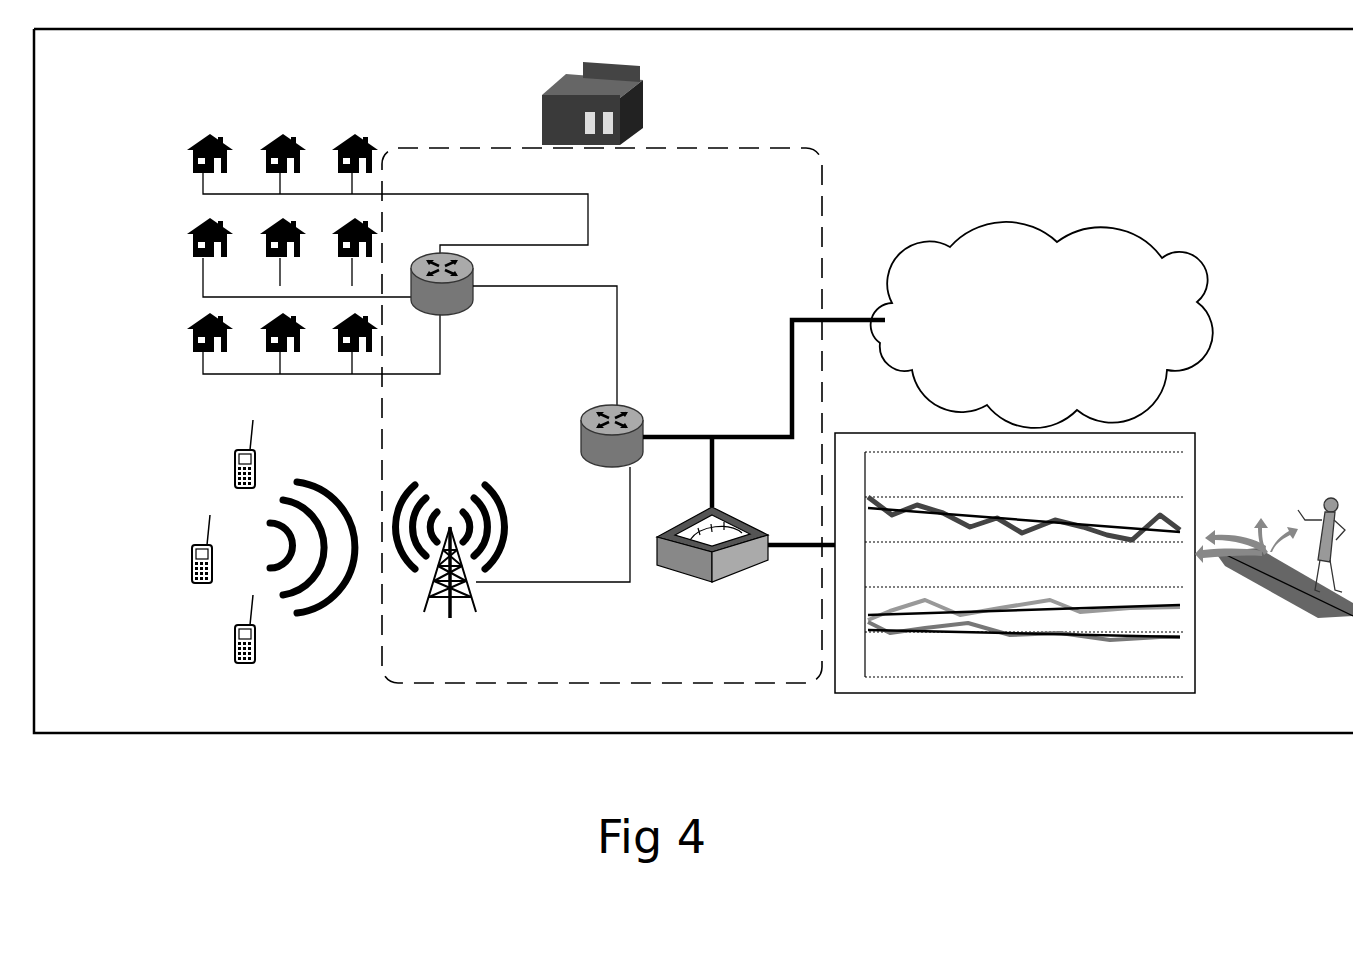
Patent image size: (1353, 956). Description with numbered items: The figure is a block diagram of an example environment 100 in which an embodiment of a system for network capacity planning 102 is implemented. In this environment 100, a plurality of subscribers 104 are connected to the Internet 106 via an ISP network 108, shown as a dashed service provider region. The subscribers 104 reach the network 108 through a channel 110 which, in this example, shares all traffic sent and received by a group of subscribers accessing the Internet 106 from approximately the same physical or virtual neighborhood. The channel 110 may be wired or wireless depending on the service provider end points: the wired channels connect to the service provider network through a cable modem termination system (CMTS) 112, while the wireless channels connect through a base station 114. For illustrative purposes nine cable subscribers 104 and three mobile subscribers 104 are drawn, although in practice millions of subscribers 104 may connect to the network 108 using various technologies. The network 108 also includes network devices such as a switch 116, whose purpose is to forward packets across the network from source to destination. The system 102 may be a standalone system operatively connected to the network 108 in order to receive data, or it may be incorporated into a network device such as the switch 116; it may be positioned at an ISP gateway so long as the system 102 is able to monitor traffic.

The environment 100 is at (877, 118).
The system for network capacity planning 102 is at (748, 550).
The subscribers 104 is at (192, 240).
The Internet 106 is at (1010, 222).
The ISP network 108 is at (733, 150).
The channel 110 is at (379, 194).
The cable modem termination system (CMTS) 112 is at (456, 268).
The base station 114 is at (455, 522).
The switch 116 is at (613, 412).